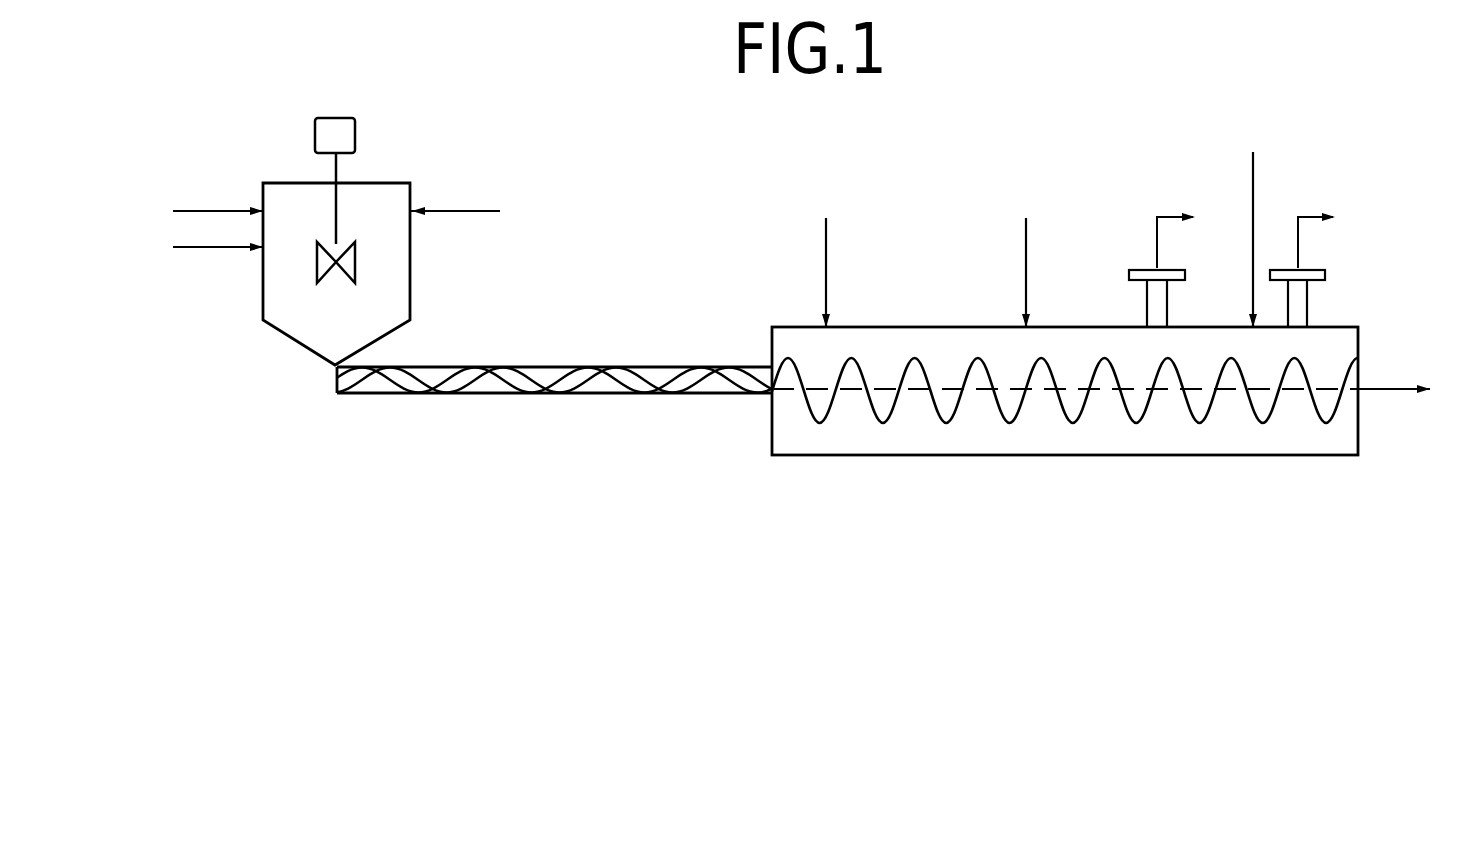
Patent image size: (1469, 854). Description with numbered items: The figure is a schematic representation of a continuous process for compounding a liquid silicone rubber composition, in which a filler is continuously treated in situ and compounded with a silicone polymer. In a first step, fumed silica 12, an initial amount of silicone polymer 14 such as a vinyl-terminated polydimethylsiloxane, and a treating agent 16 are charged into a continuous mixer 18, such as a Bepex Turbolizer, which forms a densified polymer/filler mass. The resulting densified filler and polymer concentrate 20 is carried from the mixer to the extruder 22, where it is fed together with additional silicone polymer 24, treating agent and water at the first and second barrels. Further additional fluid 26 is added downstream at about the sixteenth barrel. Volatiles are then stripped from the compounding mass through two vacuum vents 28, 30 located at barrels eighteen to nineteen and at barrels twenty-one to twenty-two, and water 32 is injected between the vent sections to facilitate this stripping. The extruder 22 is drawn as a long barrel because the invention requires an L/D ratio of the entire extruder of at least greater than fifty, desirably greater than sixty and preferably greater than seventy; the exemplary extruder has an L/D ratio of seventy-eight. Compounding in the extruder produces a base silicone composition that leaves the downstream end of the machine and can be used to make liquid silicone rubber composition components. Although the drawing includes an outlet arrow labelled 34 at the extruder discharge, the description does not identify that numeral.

The fumed silica 12 is at (213, 211).
The silicone polymer 14 is at (452, 211).
The treating agent 16 is at (218, 250).
The continuous mixer 18 is at (410, 277).
The densified filler and polymer concentrate 20 is at (587, 373).
The extruder 22 is at (983, 455).
The additional silicone polymer 24 is at (827, 268).
The further additional fluid 26 is at (1027, 268).
The vacuum vent 28 is at (1168, 307).
The vacuum vent 30 is at (1310, 305).
The water 32 is at (1253, 192).
The product outlet 34 is at (1382, 390).